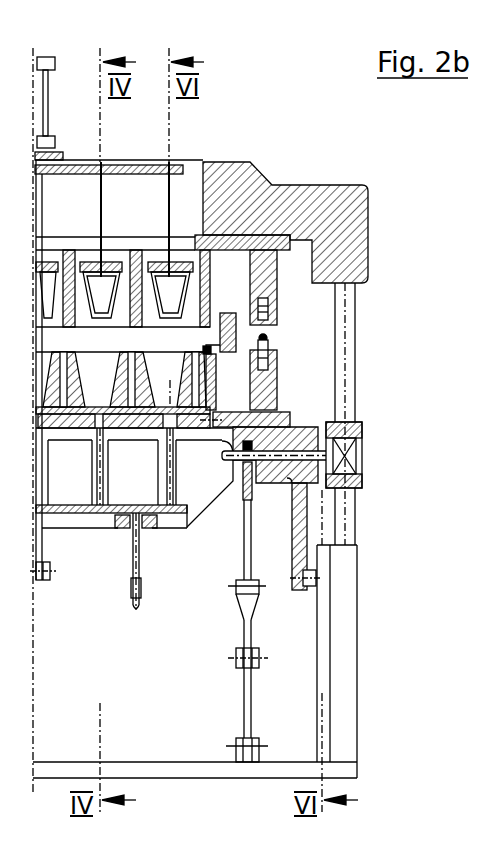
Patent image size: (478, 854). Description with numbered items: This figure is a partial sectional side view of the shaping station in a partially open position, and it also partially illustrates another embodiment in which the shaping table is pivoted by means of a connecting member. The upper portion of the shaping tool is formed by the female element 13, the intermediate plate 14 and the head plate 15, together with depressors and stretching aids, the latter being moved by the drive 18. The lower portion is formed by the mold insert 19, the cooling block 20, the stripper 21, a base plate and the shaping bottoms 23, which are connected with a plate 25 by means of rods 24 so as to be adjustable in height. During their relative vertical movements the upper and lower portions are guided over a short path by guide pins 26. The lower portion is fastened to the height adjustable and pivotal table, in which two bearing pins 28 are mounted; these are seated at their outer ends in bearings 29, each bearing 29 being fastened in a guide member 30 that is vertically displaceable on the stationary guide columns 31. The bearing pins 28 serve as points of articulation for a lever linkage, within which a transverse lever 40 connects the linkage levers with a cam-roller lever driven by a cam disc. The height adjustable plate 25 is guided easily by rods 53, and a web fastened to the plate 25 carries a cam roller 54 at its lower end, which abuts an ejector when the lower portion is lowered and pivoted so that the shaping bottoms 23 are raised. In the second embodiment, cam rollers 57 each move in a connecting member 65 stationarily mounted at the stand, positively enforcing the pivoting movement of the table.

The female element 13 is at (210, 308).
The intermediate plate 14 is at (242, 188).
The head plate 15 is at (262, 247).
The drive 18 is at (67, 84).
The mold insert 19 is at (78, 390).
The cooling block 20 is at (212, 386).
The stripper 21 is at (268, 313).
The shaping bottoms 23 is at (170, 383).
The rods 24 is at (174, 490).
The plate 25 is at (183, 512).
The guide pins 26 is at (268, 343).
The bearing pins 28 is at (350, 457).
The bearings 29 is at (347, 468).
The guide member 30 is at (360, 424).
The guide columns 31 is at (346, 512).
The transverse lever 40 is at (262, 658).
The rods 53 is at (138, 582).
The cam roller 54 is at (47, 582).
The cam rollers 57 is at (312, 580).
The connecting member 65 is at (324, 553).